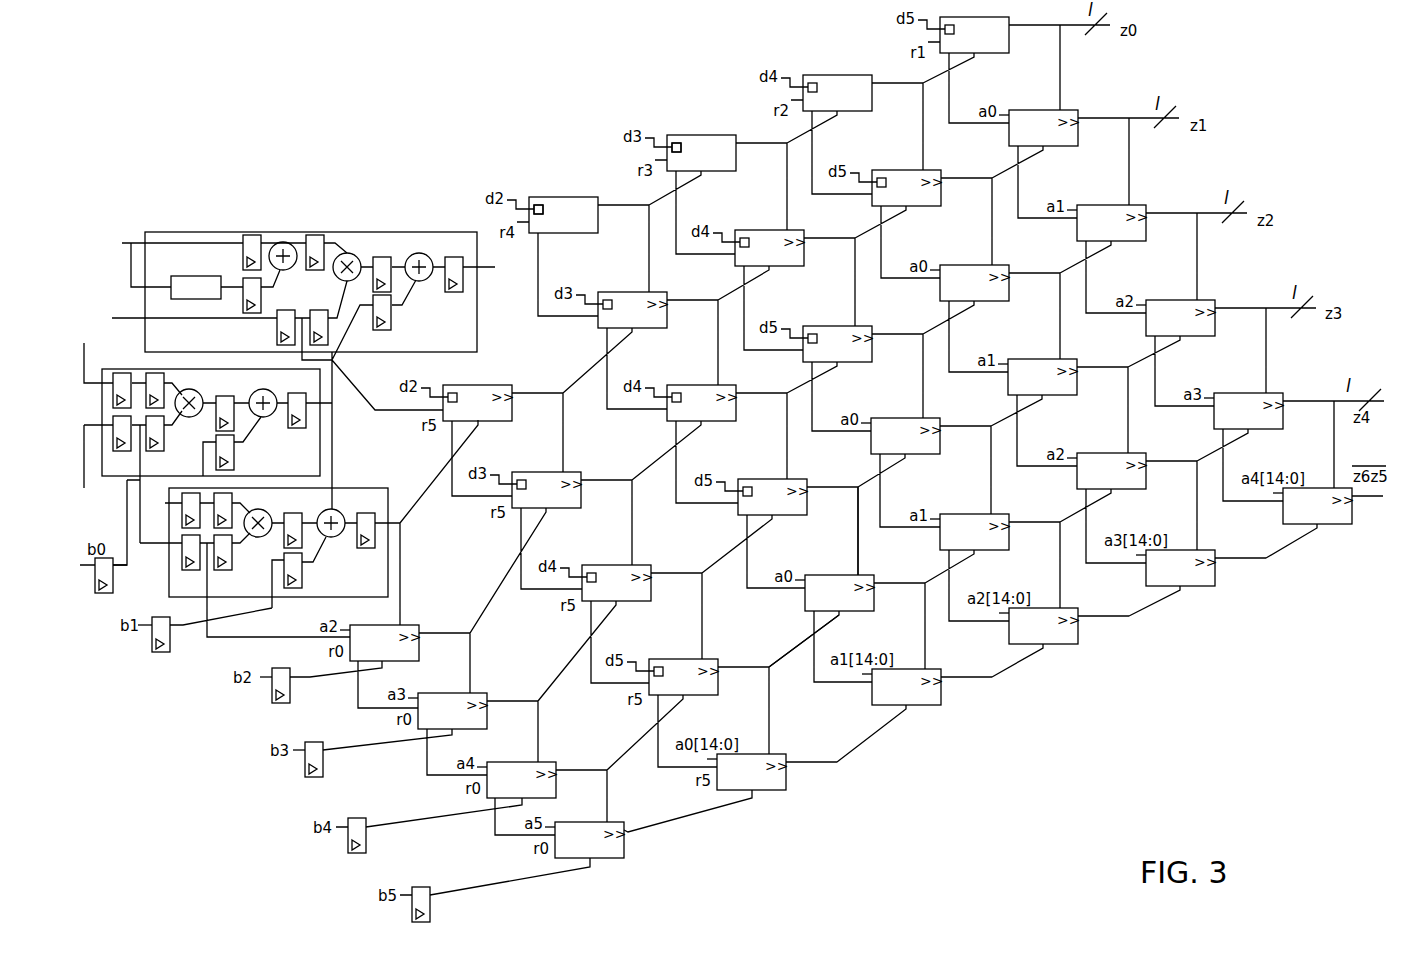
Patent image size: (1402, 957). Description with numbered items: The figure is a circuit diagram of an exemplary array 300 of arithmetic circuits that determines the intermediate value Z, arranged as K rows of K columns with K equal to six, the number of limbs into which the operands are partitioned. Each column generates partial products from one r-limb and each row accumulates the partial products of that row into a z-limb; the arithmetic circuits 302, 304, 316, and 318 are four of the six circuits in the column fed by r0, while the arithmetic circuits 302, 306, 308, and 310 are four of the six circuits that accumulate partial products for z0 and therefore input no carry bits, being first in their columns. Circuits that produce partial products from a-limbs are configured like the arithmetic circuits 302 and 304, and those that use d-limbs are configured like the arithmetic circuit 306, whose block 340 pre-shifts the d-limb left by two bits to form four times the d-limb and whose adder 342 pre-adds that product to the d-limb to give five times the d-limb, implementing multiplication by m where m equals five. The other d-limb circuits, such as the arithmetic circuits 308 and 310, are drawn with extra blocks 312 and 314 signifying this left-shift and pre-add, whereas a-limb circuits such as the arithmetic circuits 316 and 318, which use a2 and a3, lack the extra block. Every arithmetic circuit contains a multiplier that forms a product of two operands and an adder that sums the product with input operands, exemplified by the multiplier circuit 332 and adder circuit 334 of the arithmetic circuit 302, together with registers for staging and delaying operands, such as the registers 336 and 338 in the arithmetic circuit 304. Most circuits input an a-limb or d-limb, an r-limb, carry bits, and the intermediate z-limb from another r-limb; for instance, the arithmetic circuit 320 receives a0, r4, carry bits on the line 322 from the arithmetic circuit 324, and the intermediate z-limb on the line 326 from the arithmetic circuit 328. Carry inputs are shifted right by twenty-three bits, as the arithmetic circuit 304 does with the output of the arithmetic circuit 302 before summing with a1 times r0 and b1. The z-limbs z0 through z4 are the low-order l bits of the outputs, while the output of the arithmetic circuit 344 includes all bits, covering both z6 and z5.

The array of arithmetic circuits 300 is at (304, 109).
The arithmetic circuit 302 is at (240, 451).
The arithmetic circuit 304 is at (309, 528).
The arithmetic circuit 306 is at (294, 358).
The arithmetic circuit 308 is at (557, 197).
The arithmetic circuit 310 is at (692, 135).
The block 312 is at (543, 210).
The block 314 is at (681, 150).
The arithmetic circuit 316 is at (417, 625).
The arithmetic circuit 318 is at (478, 693).
The arithmetic circuit 320 is at (827, 575).
The line 322 is at (857, 555).
The arithmetic circuit 324 is at (758, 479).
The line 326 is at (794, 643).
The arithmetic circuit 328 is at (672, 659).
The multiplier circuit 332 is at (199, 393).
The adder circuit 334 is at (268, 417).
The register 336 is at (232, 560).
The register 338 is at (358, 549).
The block 340 is at (203, 276).
The adder 342 is at (293, 267).
The arithmetic circuit 344 is at (1333, 525).